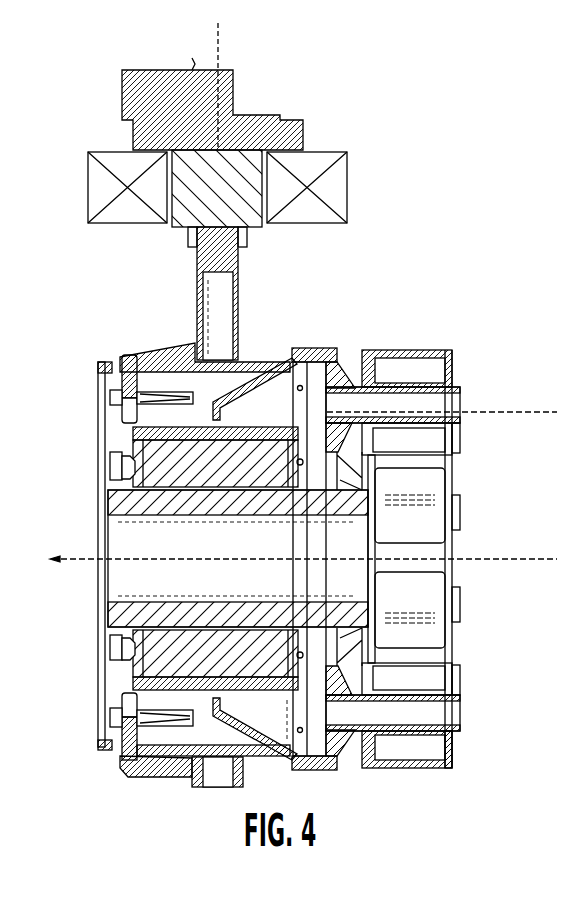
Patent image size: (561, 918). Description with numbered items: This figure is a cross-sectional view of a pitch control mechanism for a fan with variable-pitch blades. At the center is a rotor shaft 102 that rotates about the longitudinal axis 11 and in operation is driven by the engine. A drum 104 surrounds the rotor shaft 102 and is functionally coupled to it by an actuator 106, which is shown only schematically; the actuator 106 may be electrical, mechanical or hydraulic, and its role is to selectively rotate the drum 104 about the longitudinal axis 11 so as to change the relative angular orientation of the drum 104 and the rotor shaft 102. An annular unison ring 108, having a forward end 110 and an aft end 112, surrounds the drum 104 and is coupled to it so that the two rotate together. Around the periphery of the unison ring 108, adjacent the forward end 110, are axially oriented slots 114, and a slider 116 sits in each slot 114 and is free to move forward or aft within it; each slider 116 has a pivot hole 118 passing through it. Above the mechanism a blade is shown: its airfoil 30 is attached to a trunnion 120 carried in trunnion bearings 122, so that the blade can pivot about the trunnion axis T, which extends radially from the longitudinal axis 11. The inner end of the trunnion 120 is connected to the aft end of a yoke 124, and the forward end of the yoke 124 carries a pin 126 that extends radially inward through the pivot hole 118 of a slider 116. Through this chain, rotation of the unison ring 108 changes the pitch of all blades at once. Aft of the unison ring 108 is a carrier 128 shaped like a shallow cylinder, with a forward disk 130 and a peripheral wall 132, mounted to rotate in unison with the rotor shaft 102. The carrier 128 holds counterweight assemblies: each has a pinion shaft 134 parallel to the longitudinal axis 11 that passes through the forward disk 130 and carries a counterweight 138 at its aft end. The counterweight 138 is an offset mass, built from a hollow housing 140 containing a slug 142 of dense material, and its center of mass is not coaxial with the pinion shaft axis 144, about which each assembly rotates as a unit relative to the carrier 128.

The longitudinal axis 11 is at (527, 560).
The airfoil 30 is at (164, 99).
The trunnion axis T is at (218, 48).
The rotor shaft 102 is at (203, 591).
The drum 104 is at (131, 430).
The actuator 106 is at (203, 473).
The unison ring 108 is at (250, 367).
The forward end 110 is at (104, 356).
The aft end 112 is at (285, 344).
The slot 114 is at (113, 750).
The slider 116 is at (112, 650).
The pivot hole 118 is at (127, 667).
The trunnion 120 is at (258, 228).
The trunnion bearing 122 is at (349, 188).
The yoke 124 is at (155, 345).
The pin 126 is at (122, 412).
The carrier 128 is at (426, 553).
The forward disk 130 is at (360, 362).
The peripheral wall 132 is at (423, 350).
The pinion shaft 134 is at (450, 398).
The counterweight 138 is at (420, 630).
The hollow housing 140 is at (418, 762).
The slug 142 is at (453, 738).
The pinion shaft axis 144 is at (510, 415).